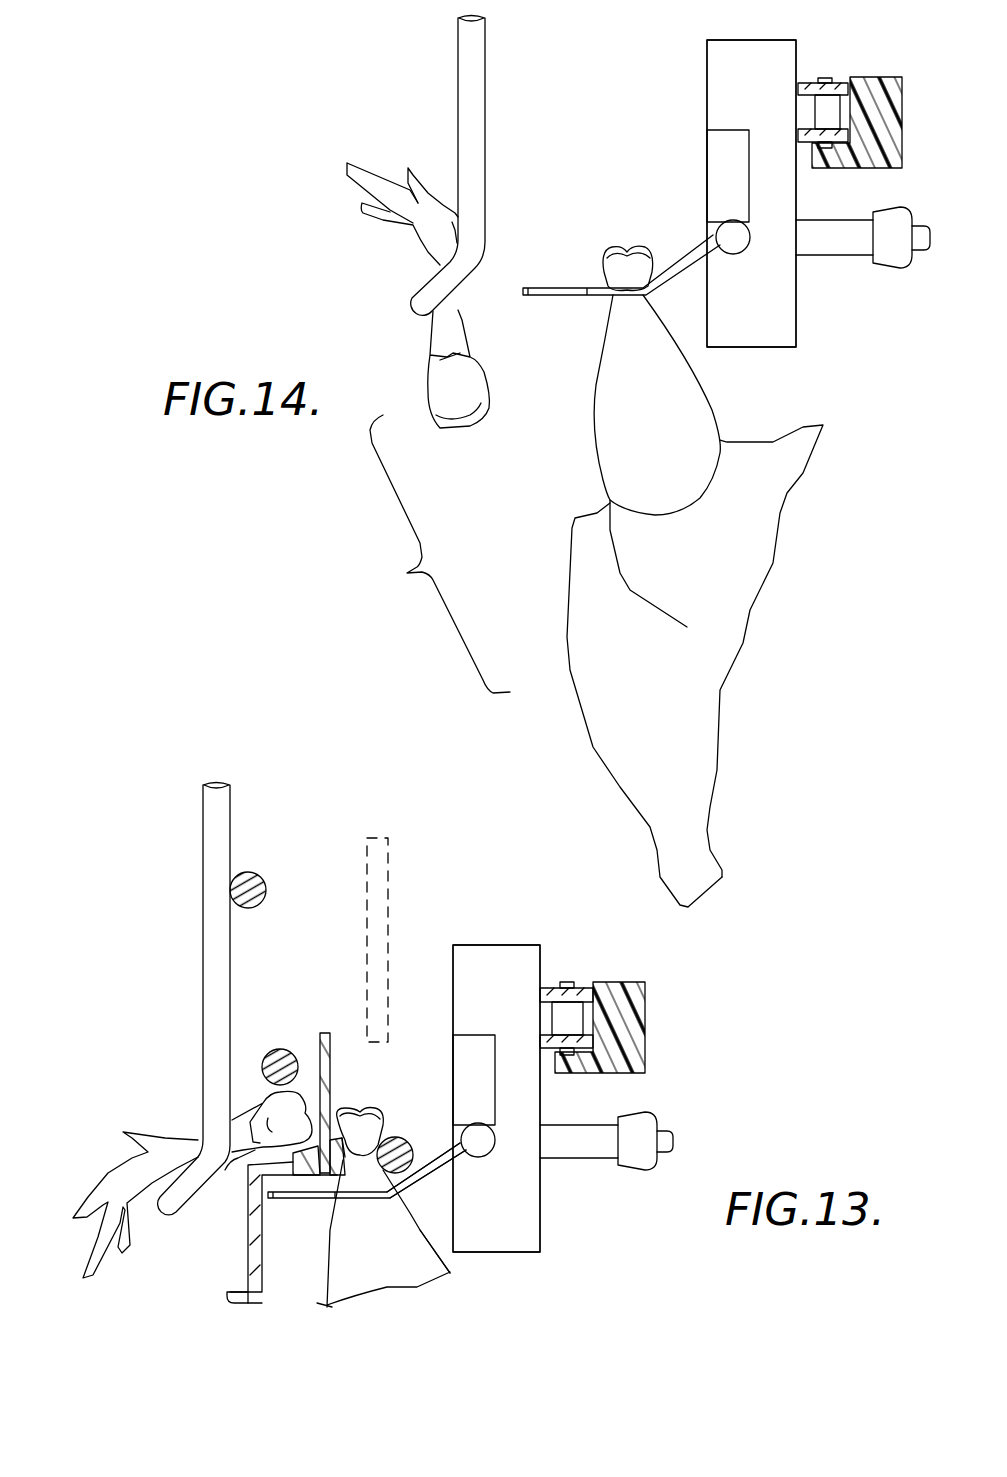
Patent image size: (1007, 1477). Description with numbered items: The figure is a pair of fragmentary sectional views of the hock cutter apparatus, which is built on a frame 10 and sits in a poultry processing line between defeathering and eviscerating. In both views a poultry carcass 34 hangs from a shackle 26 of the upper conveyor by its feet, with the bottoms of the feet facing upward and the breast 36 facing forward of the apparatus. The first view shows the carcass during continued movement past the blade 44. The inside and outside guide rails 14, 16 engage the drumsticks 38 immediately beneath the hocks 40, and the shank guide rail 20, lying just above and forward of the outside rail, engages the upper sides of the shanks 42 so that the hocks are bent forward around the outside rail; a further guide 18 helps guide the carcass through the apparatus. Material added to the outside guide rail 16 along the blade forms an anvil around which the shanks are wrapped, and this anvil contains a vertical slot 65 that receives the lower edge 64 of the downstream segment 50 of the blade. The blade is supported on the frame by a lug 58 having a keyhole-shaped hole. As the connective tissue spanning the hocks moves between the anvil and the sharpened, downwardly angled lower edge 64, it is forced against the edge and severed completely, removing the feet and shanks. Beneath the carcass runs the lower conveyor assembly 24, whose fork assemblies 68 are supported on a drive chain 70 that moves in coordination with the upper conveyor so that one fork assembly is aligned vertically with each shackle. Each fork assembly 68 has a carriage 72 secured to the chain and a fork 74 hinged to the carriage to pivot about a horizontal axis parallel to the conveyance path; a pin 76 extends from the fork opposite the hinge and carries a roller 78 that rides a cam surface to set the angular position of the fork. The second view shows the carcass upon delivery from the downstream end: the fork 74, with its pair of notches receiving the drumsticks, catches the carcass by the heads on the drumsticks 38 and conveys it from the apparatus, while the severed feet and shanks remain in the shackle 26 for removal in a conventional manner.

In FIG. 13, the frame 10 is at (663, 1005).
In FIG. 13, the inside guide rail 14 is at (393, 1147).
In FIG. 13, the outside guide rail 16 is at (255, 1150).
In FIG. 13, the guide 18 is at (255, 888).
In FIG. 13, the shank guide rail 20 is at (268, 1050).
In FIG. 14, the lower conveyor assembly 24 is at (848, 60).
In FIG. 14, the shackle 26 is at (480, 98).
In FIG. 13, the shackle 26 is at (215, 955).
In FIG. 14, the poultry carcass 34 is at (738, 672).
In FIG. 13, the poultry carcass 34 is at (427, 1288).
In FIG. 14, the breast 36 is at (583, 683).
In FIG. 14, the drumstick 38 is at (703, 423).
In FIG. 13, the drumstick 38 is at (343, 1293).
In FIG. 13, the hock 40 is at (383, 1103).
In FIG. 14, the shank 42 is at (445, 318).
In FIG. 13, the shank 42 is at (200, 1142).
In FIG. 13, the blade 44 is at (330, 1023).
In FIG. 13, the downstream segment 50 is at (303, 1050).
In FIG. 13, the lug 58 is at (397, 868).
In FIG. 13, the lower edge 64 is at (343, 1173).
In FIG. 13, the vertical slot 65 is at (325, 1177).
In FIG. 14, the fork assembly 68 is at (705, 123).
In FIG. 13, the fork assembly 68 is at (545, 1238).
In FIG. 14, the drive chain 70 is at (820, 115).
In FIG. 13, the drive chain 70 is at (558, 1008).
In FIG. 14, the carriage 72 is at (720, 55).
In FIG. 13, the carriage 72 is at (460, 967).
In FIG. 14, the fork 74 is at (578, 295).
In FIG. 13, the fork 74 is at (418, 1177).
In FIG. 14, the pin 76 is at (812, 233).
In FIG. 13, the pin 76 is at (557, 1130).
In FIG. 14, the roller 78 is at (893, 255).
In FIG. 13, the roller 78 is at (640, 1158).